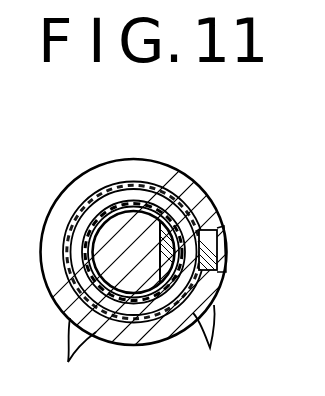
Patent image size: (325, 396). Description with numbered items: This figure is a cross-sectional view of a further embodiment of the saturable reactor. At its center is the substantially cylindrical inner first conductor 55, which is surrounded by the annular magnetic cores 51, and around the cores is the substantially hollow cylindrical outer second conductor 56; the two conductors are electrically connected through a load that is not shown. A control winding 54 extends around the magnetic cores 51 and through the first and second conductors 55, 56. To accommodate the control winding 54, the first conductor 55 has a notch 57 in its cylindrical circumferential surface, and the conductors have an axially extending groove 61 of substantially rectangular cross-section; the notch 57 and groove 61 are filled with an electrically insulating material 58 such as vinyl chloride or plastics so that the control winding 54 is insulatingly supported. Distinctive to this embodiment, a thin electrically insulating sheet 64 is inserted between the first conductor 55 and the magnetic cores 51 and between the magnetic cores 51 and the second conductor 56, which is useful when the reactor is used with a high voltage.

The magnetic core 51 is at (165, 203).
The control winding 54 is at (215, 222).
The first conductor 55 is at (147, 184).
The second conductor 56 is at (100, 164).
The notch 57 is at (205, 206).
The insulating material 58 is at (216, 346).
The groove 61 is at (214, 255).
The insulating sheet 64 is at (63, 353).